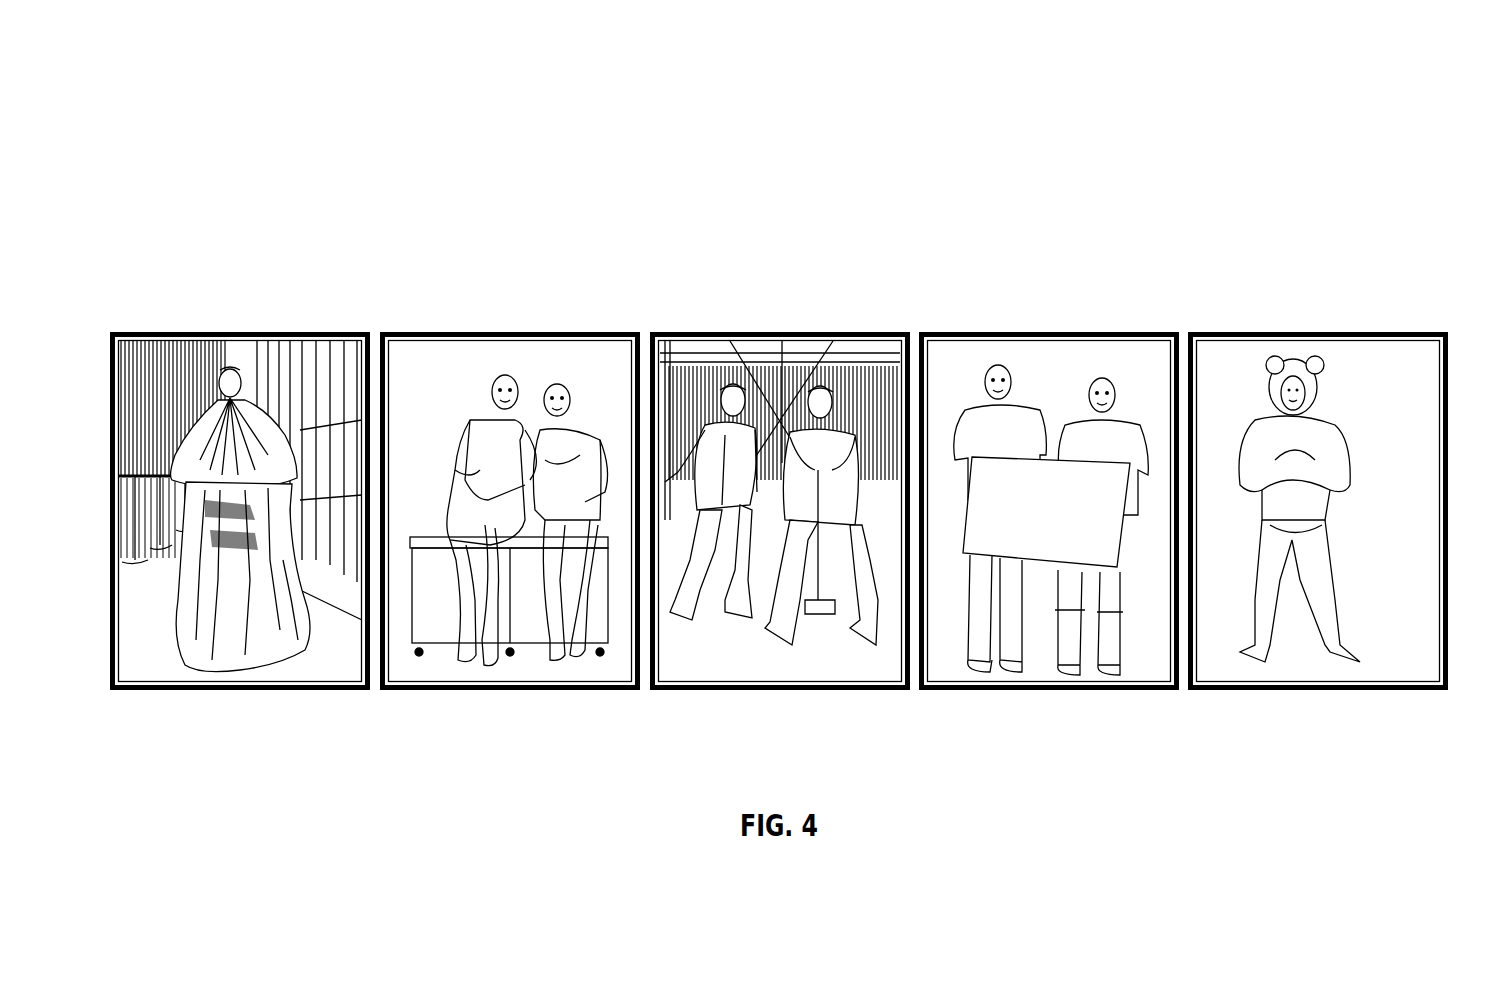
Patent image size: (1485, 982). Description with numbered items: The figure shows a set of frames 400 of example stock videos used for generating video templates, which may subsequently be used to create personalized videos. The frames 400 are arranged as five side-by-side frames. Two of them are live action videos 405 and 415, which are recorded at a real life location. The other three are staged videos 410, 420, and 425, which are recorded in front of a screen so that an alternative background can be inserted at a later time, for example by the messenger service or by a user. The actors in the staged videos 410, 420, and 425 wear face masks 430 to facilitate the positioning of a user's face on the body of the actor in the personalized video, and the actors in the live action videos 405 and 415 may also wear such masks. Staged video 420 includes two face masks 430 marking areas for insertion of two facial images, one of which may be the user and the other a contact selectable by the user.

The video frames / comic strip 400 is at (1186, 166).
The live action video 405 is at (298, 690).
The staged video 410 is at (415, 353).
The live action video 415 is at (885, 665).
The staged video 420 is at (1142, 357).
The staged video 425 is at (1352, 365).
The face mask 430 is at (1293, 372).